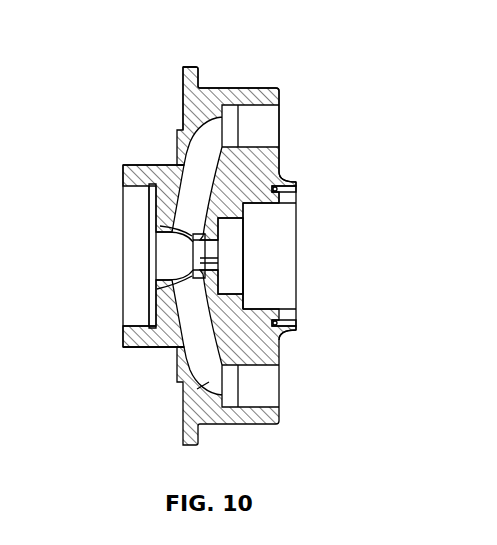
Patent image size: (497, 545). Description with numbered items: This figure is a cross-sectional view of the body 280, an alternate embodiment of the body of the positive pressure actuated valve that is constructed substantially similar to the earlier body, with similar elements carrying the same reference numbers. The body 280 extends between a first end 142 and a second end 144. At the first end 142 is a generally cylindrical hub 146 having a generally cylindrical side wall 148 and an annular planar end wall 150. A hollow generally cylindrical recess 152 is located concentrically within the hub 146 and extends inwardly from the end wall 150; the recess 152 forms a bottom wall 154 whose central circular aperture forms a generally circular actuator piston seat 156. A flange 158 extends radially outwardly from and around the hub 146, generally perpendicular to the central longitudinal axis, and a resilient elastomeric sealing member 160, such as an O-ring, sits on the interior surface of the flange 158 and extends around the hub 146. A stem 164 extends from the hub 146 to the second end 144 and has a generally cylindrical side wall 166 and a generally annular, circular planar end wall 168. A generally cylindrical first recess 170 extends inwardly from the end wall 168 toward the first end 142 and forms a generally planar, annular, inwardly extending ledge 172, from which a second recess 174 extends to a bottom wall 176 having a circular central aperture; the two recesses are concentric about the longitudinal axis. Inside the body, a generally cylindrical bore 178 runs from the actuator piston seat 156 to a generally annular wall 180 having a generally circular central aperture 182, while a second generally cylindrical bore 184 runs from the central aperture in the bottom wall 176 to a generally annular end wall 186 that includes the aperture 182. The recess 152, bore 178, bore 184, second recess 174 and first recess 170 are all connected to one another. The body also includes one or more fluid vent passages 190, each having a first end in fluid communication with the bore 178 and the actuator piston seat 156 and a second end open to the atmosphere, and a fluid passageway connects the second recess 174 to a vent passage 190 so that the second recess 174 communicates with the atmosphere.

The body 280 is at (86, 40).
The first end 142 is at (125, 166).
The second end 144 is at (300, 182).
The hub 146 is at (134, 348).
The side wall 148 is at (145, 348).
The end wall 150 is at (126, 338).
The recess 152 is at (133, 303).
The bottom wall 154 is at (150, 190).
The actuator piston seat 156 is at (165, 228).
The flange 158 is at (183, 74).
The sealing member 160 is at (182, 128).
The stem 164 is at (281, 176).
The side wall 166 is at (290, 333).
The end wall 168 is at (296, 186).
The first recess 170 is at (285, 268).
The ledge 172 is at (296, 197).
The second recess 174 is at (227, 240).
The bottom wall 176 is at (243, 230).
The bore 178 is at (165, 254).
The annular wall 180 is at (158, 206).
The central aperture 182 is at (168, 271).
The bore 184 is at (215, 263).
The end wall 186 is at (218, 266).
The fluid vent passage 190 is at (177, 135).